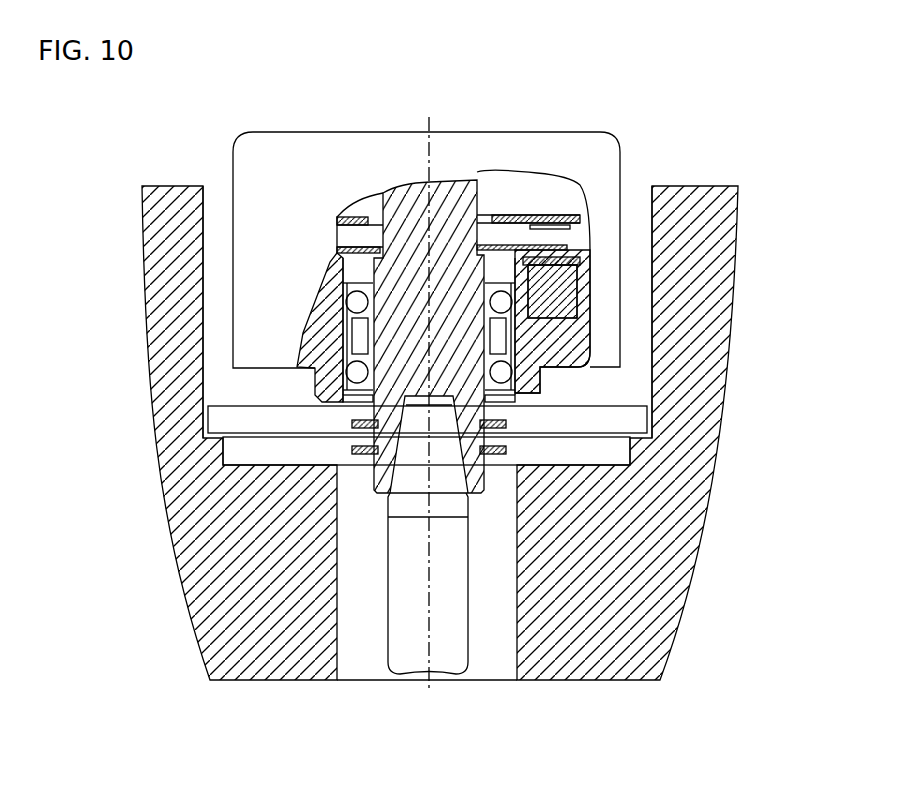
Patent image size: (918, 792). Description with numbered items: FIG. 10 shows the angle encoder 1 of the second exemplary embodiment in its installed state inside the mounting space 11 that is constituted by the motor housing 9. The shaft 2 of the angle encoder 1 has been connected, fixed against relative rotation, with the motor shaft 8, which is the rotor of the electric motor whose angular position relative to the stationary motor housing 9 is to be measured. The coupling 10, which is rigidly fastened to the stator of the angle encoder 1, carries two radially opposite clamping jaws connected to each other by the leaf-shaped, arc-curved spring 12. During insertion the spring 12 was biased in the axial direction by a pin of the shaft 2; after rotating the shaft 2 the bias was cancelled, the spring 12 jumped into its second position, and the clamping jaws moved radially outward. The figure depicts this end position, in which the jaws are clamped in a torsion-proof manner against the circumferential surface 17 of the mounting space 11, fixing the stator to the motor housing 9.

The angle encoder 1 is at (553, 145).
The shaft 2 is at (481, 500).
The motor shaft 8 is at (457, 640).
The motor housing 9 is at (657, 610).
The coupling 10 is at (623, 394).
The mounting space 11 is at (218, 210).
The spring 12 is at (613, 432).
The circumferential surface 17 is at (641, 222).